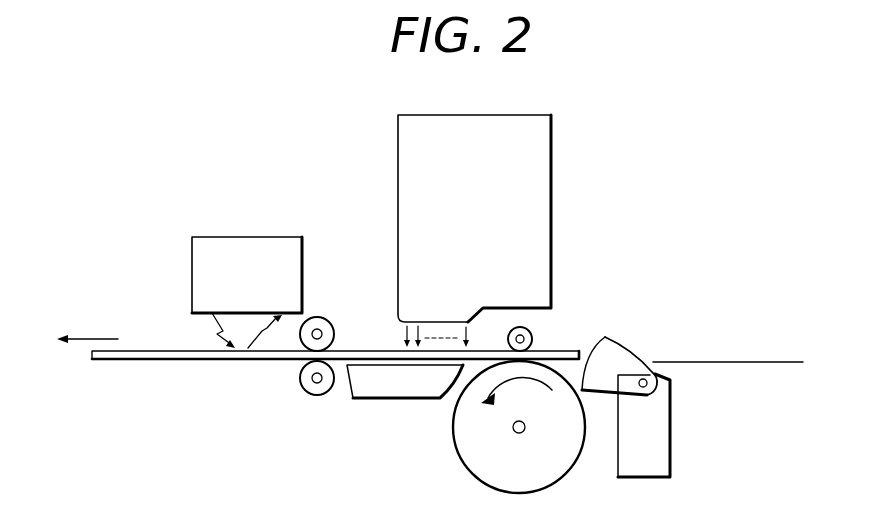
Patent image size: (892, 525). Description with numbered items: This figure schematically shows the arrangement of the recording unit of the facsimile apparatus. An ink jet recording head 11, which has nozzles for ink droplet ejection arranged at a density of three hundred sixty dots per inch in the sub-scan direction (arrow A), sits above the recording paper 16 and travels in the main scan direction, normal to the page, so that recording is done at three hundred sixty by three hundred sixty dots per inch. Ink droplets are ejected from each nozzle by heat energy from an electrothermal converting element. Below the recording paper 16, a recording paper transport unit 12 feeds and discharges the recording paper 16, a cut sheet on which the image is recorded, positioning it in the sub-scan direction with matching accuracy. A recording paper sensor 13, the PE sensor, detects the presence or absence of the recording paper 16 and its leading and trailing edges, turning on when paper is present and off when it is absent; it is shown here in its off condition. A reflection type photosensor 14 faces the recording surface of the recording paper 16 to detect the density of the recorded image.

The recording head 11 is at (552, 140).
The recording paper transport unit 12 is at (457, 452).
The recording paper sensor 13 is at (670, 413).
The reflection type photosensor 14 is at (282, 236).
The recording paper 16 is at (165, 360).